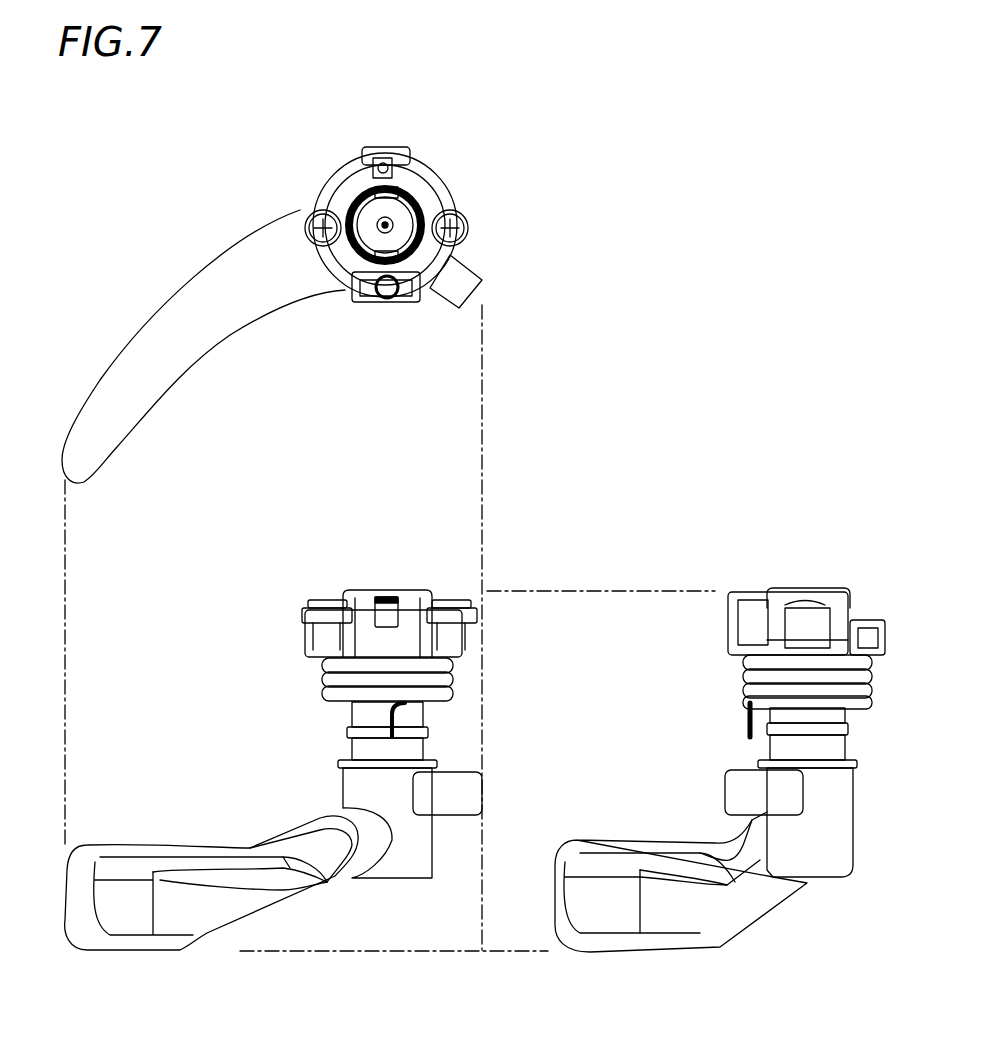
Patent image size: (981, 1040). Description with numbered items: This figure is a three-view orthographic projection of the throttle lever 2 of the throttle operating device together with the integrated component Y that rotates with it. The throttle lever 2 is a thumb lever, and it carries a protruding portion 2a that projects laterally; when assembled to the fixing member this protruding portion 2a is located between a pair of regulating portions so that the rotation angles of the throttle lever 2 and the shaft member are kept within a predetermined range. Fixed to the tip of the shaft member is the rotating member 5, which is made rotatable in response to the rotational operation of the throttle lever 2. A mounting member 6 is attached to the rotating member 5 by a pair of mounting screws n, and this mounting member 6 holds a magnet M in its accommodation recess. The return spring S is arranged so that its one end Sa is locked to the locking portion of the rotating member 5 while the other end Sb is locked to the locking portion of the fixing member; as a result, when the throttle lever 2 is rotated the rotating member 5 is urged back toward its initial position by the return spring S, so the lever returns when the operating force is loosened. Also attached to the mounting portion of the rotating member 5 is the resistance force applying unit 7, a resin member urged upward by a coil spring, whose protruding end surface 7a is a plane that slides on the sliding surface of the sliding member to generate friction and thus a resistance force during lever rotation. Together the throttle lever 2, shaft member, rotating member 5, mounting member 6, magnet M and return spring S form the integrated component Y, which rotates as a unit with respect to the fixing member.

The throttle lever 2 is at (135, 320).
The protruding portion 2a is at (482, 268).
The rotating member 5 is at (338, 170).
The mounting member 6 is at (468, 210).
The resistance force applying unit 7 is at (365, 305).
The protruding end surface 7a is at (390, 300).
The mounting screws n is at (305, 210).
The magnet M is at (427, 198).
The one end of the return spring Sa is at (383, 148).
The return spring S is at (322, 680).
The other end of the return spring Sb is at (385, 722).
The integrated component Y is at (205, 190).